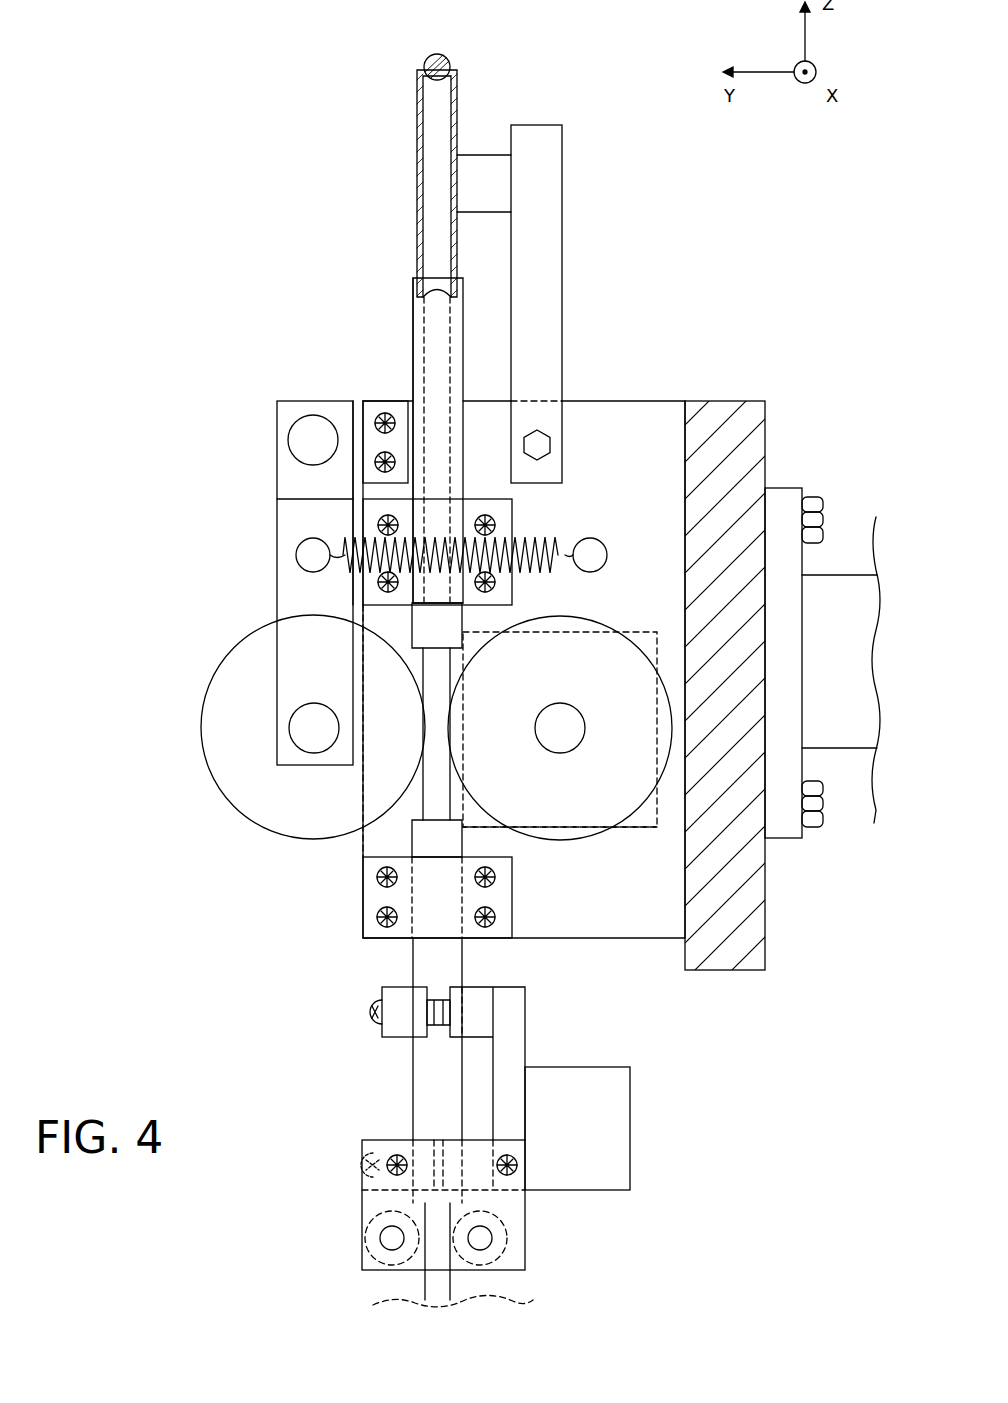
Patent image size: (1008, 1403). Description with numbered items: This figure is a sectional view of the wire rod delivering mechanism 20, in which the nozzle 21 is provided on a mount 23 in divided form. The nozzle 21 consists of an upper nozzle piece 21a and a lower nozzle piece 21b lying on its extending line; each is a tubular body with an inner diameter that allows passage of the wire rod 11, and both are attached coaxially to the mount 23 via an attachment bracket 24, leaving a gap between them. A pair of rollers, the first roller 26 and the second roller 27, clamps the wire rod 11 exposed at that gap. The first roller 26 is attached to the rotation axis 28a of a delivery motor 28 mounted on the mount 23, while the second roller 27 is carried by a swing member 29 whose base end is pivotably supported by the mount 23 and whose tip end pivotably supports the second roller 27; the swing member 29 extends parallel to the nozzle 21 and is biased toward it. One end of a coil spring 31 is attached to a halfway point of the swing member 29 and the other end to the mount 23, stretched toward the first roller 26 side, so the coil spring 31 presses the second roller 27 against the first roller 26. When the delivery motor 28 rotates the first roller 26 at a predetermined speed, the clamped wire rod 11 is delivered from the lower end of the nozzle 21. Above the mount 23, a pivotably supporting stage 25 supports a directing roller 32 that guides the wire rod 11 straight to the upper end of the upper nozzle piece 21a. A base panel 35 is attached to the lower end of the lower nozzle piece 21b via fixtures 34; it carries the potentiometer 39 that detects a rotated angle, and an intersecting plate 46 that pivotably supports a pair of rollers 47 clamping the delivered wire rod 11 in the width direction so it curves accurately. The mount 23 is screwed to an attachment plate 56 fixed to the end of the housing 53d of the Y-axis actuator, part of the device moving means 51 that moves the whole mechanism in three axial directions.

The wire rod delivering mechanism 20 is at (158, 181).
The wire rod 11 is at (447, 62).
The directing roller 32 is at (457, 98).
The pivotably supporting stage 25 is at (562, 191).
The nozzle 21 is at (402, 317).
The upper nozzle piece 21a is at (423, 345).
The lower nozzle piece 21b is at (416, 964).
The mount 23 is at (640, 405).
The attachment plate 56 is at (722, 420).
The swing member 29 is at (290, 492).
The attachment bracket 24 is at (495, 505).
The coil spring 31 is at (452, 548).
The second roller 27 is at (262, 810).
The delivery motor 28 is at (608, 635).
The rotation axis 28a is at (585, 720).
The first roller 26 is at (590, 840).
The device moving means 51 is at (860, 575).
The housing 53d is at (845, 750).
The base panel 35 is at (517, 1032).
The fixtures 34 is at (388, 1037).
The potentiometer 39 is at (630, 1140).
The intersecting plate 46 is at (365, 1204).
The rollers 47 is at (525, 1262).